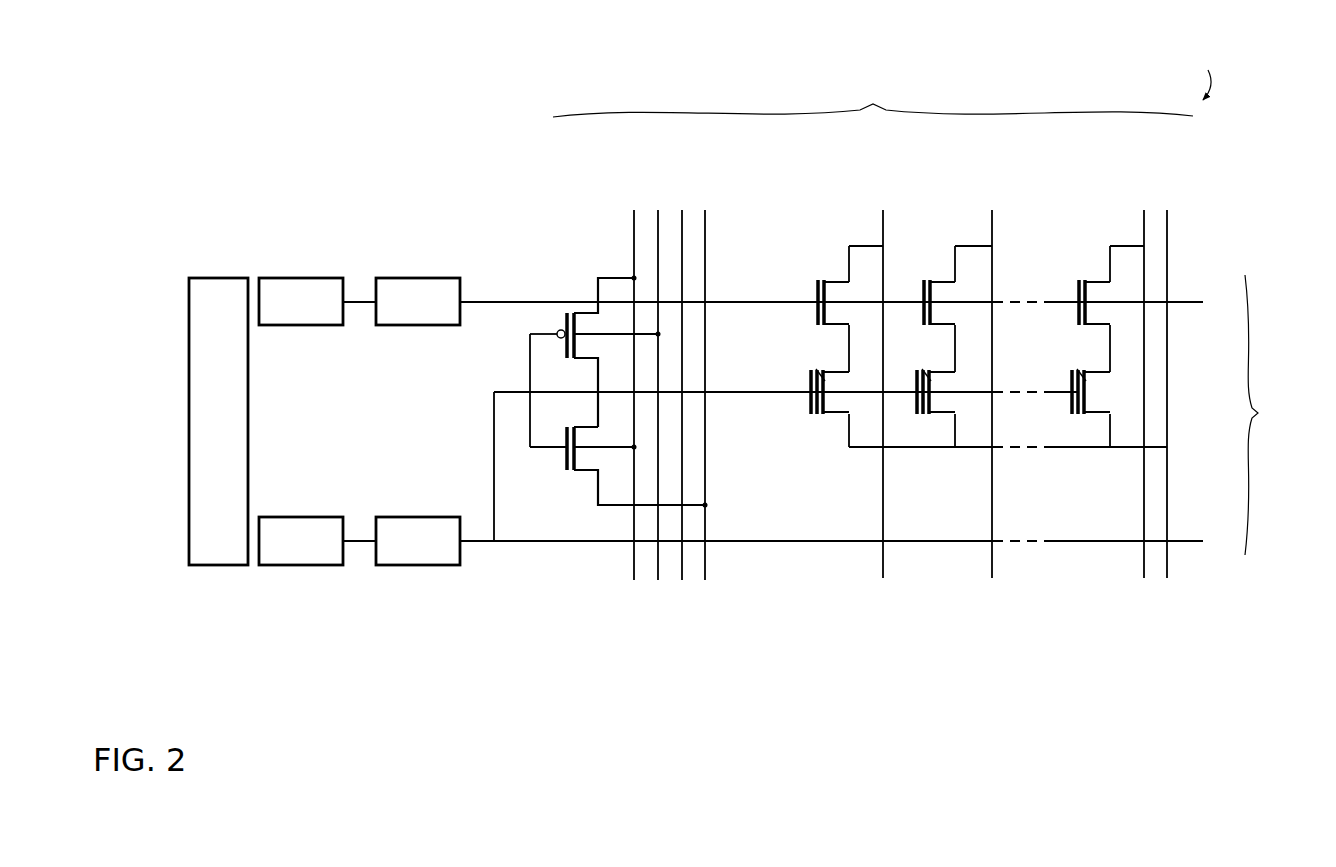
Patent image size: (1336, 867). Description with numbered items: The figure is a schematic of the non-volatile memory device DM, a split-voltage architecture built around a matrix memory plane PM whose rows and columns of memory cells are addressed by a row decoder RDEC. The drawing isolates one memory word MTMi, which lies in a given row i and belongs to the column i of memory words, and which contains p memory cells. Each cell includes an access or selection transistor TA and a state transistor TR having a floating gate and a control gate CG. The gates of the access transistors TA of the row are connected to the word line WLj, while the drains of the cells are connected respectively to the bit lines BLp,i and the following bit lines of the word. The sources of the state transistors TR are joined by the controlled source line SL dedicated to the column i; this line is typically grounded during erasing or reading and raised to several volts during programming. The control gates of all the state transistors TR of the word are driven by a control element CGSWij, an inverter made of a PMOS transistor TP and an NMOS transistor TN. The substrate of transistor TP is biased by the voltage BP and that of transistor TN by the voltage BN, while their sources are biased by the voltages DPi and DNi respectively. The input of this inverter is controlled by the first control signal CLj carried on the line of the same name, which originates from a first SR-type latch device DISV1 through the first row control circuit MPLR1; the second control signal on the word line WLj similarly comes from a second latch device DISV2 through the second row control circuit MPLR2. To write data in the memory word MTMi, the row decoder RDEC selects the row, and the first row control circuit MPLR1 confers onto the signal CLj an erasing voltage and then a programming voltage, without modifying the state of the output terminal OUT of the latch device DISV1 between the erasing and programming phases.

The row decoder RDEC is at (218, 421).
The second latch device DISV2 is at (301, 301).
The second row control circuit MPLR2 is at (418, 301).
The first latch device DISV1 is at (301, 541).
The first row control circuit MPLR1 is at (418, 541).
The output terminal OUT is at (345, 544).
The non-volatile memory device DM is at (419, 603).
The word line WLj is at (836, 292).
The line carrying first control signal CLj is at (834, 531).
The control gate CG is at (786, 457).
The control element CGSWij is at (610, 403).
The PMOS transistor TP is at (595, 352).
The NMOS transistor TN is at (548, 490).
The substrate bias voltage of transistor TN BN is at (635, 383).
The source bias voltage of transistor TP DPi is at (659, 382).
The substrate bias voltage of transistor TP BP is at (683, 384).
The source bias voltage of transistor TN DNi is at (706, 381).
The memory word MTMi is at (995, 388).
The bit line BLp,i is at (884, 375).
The access transistor TA is at (826, 256).
The state transistor TR is at (827, 434).
The source line SL is at (1168, 384).
The column of memory words column i is at (873, 99).
The row of memory cells row i is at (1274, 415).
The memory plane PM is at (1210, 76).